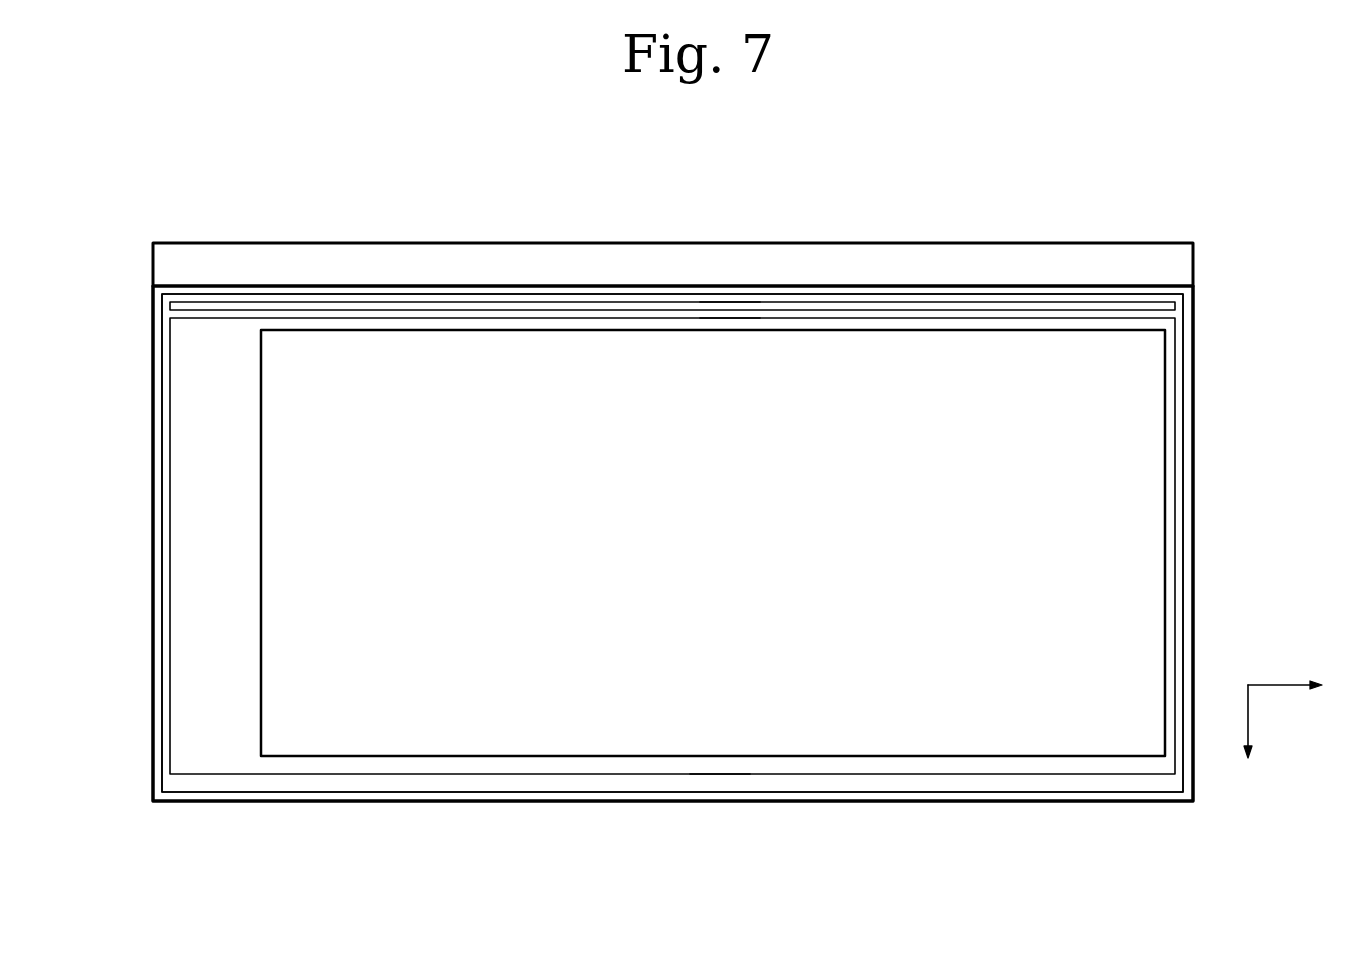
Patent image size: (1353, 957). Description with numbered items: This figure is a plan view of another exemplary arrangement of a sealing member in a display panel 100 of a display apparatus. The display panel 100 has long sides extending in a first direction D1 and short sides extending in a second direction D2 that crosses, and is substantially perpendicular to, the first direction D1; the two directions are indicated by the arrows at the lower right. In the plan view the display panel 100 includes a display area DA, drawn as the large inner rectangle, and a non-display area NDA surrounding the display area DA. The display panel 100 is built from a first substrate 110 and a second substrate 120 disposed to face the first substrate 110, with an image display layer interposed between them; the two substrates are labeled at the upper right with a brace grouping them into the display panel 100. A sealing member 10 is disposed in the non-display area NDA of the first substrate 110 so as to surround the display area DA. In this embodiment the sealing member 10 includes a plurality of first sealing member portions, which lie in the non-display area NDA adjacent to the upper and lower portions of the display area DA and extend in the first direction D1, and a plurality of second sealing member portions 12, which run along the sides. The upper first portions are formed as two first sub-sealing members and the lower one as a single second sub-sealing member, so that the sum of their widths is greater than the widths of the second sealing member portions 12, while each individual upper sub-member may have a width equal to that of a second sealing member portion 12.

The display panel 100 is at (749, 522).
The first substrate 110 is at (1193, 262).
The second substrate 120 is at (1193, 303).
The sealing member 10 is at (1183, 516).
The second sealing member portions 12 is at (170, 518).
The display area DA is at (1165, 627).
The non-display area NDA is at (162, 413).
The first direction D1 is at (1300, 686).
The second direction D2 is at (1250, 738).